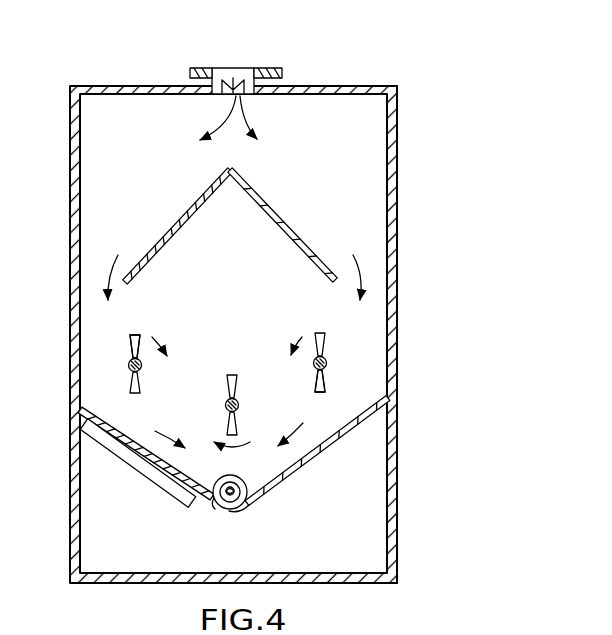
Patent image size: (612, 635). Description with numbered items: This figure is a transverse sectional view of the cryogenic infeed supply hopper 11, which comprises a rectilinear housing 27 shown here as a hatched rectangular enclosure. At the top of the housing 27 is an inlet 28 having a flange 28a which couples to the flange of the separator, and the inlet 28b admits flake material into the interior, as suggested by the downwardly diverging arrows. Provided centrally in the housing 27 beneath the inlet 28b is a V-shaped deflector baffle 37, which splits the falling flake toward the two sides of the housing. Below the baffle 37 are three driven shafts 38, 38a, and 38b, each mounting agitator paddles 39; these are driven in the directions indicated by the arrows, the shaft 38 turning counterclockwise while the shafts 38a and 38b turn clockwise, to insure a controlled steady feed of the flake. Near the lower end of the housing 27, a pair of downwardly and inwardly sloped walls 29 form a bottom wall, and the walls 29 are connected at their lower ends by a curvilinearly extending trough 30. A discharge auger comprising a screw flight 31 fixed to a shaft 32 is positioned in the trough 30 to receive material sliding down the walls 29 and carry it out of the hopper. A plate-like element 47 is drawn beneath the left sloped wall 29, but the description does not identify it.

The cryogenic infeed supply hopper 11 is at (406, 190).
The rectilinear housing 27 is at (398, 281).
The inlet 28 is at (233, 49).
The flange 28a is at (282, 72).
The inlet 28b is at (236, 69).
The V-shaped deflector baffle 37 is at (284, 218).
The driven shaft 38 is at (326, 366).
The driven shaft 38a is at (141, 369).
The driven shaft 38b is at (230, 397).
The agitator paddles 39 is at (131, 375).
The downwardly and inwardly sloped walls 29 is at (131, 441).
The heater plate 47 is at (150, 466).
The curvilinearly extending trough 30 is at (243, 505).
The screw flight 31 is at (238, 483).
The shaft 32 is at (211, 506).